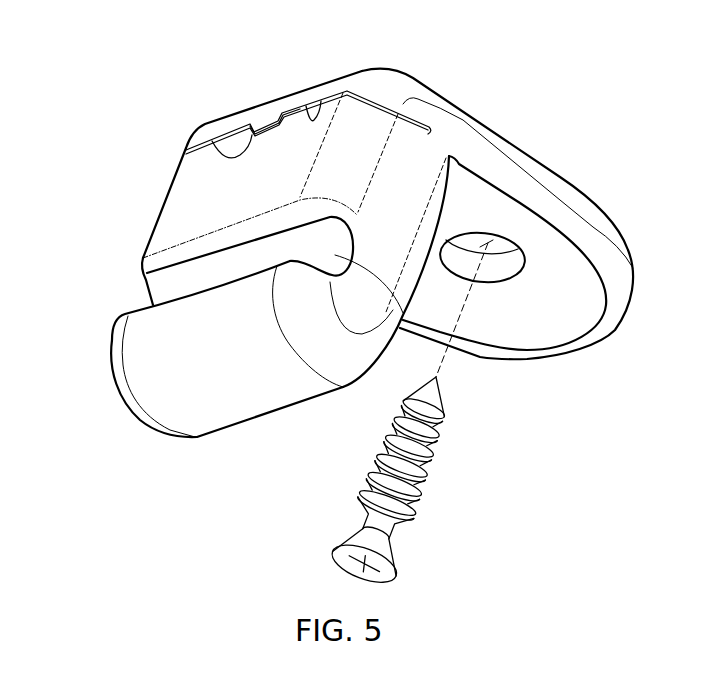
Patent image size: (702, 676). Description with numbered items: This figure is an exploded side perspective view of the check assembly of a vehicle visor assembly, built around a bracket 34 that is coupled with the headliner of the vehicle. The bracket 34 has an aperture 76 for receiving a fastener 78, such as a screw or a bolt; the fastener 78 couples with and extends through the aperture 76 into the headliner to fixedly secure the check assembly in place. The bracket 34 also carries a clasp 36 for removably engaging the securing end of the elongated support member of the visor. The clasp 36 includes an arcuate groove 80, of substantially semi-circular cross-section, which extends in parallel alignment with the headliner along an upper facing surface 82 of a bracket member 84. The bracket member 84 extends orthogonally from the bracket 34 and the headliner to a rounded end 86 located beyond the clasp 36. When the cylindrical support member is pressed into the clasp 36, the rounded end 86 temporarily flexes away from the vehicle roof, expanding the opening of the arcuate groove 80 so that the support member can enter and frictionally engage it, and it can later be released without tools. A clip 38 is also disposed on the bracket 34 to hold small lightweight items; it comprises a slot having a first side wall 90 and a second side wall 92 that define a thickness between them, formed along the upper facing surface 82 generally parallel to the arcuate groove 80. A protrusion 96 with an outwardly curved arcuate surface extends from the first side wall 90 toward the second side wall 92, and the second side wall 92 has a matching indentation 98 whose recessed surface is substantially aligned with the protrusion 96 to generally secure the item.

The bracket 34 is at (557, 202).
The clasp 36 is at (177, 277).
The clip 38 is at (334, 82).
The aperture 76 is at (509, 268).
The fastener 78 is at (436, 457).
The arcuate groove 80 is at (404, 322).
The upper facing surface 82 is at (217, 205).
The bracket member 84 is at (412, 162).
The rounded end 86 is at (312, 345).
The first side wall 90 is at (295, 110).
The second side wall 92 is at (310, 110).
The protrusion 96 is at (264, 128).
The indentation 98 is at (212, 142).